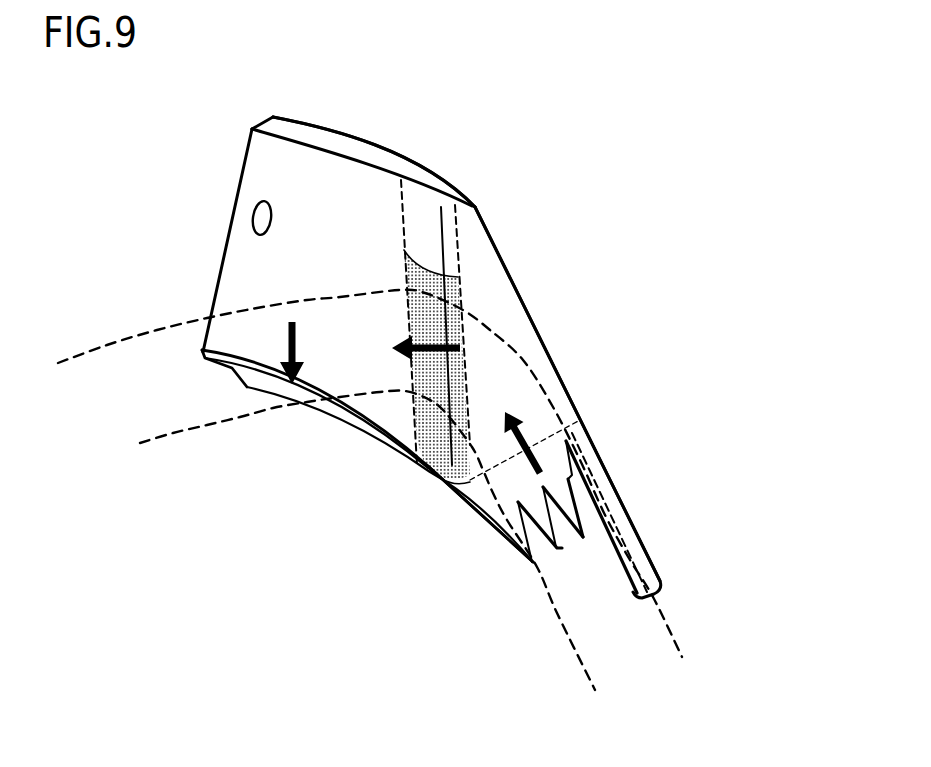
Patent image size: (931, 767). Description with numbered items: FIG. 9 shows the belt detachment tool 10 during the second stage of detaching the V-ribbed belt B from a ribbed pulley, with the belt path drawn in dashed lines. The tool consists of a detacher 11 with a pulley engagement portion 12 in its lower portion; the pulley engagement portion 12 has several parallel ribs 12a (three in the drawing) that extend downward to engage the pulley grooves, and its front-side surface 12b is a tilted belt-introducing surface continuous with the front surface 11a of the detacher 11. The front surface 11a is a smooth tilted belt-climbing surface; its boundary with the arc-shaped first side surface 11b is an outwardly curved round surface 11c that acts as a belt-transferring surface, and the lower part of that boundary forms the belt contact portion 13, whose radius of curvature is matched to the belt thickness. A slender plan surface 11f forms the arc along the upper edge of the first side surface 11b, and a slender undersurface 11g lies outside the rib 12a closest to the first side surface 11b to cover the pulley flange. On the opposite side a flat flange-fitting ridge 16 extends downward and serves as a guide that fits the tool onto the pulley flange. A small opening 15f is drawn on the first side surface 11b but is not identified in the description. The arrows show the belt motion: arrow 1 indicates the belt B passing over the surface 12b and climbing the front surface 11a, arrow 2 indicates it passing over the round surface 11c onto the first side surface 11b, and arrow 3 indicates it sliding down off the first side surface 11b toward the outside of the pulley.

The belt detachment tool 10 is at (608, 113).
The detacher 11 is at (217, 279).
The front surface 11a is at (510, 320).
The first side surface 11b is at (265, 343).
The round surface 11c is at (425, 200).
The plan surface 11f is at (308, 127).
The undersurface 11g is at (220, 362).
The pulley engagement portion 12 is at (347, 423).
The ribs 12a is at (583, 538).
The surface 12b is at (507, 483).
The belt contact portion 13 is at (432, 437).
The mounting hole 15f is at (256, 216).
The flange-fitting ridge 16 is at (625, 532).
The arrow 1 is at (510, 412).
The arrow 2 is at (397, 338).
The arrow 3 is at (297, 338).
The V-ribbed belt B is at (168, 437).